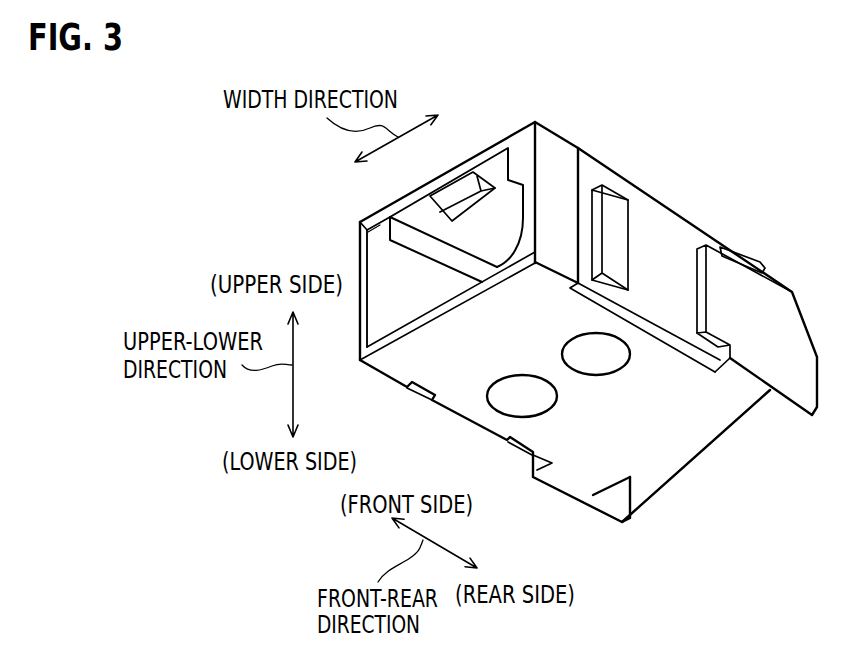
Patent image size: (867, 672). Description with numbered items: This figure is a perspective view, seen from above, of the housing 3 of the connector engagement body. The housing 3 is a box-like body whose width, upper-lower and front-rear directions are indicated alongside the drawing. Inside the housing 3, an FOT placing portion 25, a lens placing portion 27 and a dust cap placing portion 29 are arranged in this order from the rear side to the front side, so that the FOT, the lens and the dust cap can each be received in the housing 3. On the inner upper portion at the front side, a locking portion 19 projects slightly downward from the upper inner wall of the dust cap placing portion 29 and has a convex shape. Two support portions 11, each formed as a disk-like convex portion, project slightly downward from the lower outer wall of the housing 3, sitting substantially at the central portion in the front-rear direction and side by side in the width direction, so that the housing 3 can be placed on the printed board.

The housing 3 is at (705, 223).
The locking portion 19 is at (467, 202).
The lens placing portion 27 is at (650, 228).
The dust cap placing portion 29 is at (405, 305).
The FOT placing portion 25 is at (660, 413).
The support portions 11 is at (532, 402).